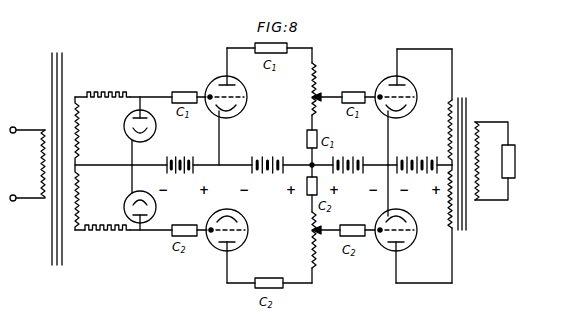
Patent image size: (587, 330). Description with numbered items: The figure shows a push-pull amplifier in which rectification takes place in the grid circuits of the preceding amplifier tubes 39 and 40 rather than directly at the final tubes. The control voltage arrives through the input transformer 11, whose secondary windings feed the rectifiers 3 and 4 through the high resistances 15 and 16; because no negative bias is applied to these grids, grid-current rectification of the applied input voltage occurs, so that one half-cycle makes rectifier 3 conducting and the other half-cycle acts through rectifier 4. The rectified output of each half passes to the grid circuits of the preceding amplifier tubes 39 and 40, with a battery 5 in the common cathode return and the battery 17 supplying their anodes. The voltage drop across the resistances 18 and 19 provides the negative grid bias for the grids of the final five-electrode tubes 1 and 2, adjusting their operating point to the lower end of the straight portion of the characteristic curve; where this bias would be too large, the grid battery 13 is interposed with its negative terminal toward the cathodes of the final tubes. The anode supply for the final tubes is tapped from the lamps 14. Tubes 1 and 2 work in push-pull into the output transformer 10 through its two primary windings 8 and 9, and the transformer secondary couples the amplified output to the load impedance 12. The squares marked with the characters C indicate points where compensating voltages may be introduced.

The five-electrode tube 1 is at (400, 107).
The five-electrode tube 2 is at (400, 224).
The rectifier 3 is at (143, 131).
The rectifier 4 is at (144, 197).
The battery 5 is at (180, 156).
The primary winding 8 is at (445, 132).
The primary winding 9 is at (445, 196).
The output transformer 10 is at (465, 101).
The input transformer 11 is at (58, 267).
The load impedance 12 is at (512, 160).
The grid battery 13 is at (348, 155).
The lamps 14 is at (417, 155).
The high resistance 15 is at (123, 87).
The high resistance 16 is at (123, 238).
The battery 17 is at (267, 155).
The resistance 18 is at (316, 96).
The resistance 19 is at (315, 247).
The preceding amplifier tube 39 is at (236, 106).
The preceding amplifier tube 40 is at (236, 246).